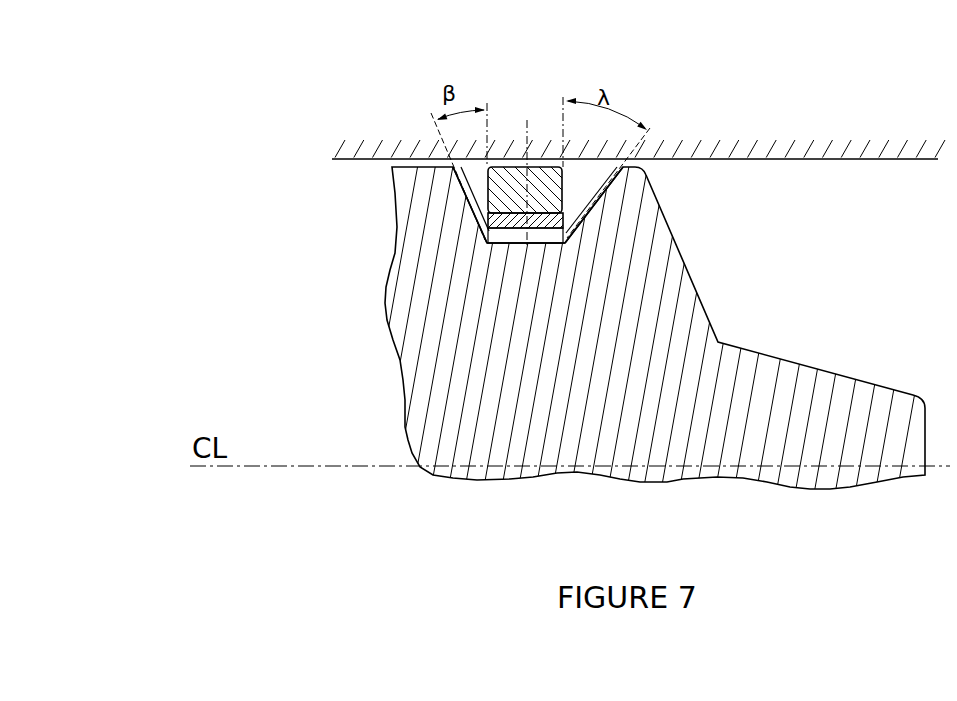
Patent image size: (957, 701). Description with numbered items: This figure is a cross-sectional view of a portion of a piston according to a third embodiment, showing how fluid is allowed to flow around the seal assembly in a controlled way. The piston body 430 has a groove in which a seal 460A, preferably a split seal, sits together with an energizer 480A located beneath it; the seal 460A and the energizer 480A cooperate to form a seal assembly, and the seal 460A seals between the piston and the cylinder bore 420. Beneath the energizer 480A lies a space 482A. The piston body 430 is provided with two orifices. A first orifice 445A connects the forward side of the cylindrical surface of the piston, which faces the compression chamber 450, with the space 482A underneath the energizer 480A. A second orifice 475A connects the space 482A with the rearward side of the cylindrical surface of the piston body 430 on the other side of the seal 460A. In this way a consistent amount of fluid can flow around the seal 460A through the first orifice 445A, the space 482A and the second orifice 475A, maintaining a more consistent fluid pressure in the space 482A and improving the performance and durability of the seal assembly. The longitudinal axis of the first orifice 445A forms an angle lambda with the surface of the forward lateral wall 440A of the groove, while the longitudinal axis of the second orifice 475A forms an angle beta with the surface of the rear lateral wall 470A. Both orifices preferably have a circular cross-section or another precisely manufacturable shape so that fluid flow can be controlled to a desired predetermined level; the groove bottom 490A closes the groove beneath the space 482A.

The cylinder bore 420 is at (398, 150).
The piston body 430 is at (497, 408).
The compression chamber 450 is at (940, 282).
The seal 460A is at (518, 185).
The rear lateral wall 470A is at (478, 185).
The second orifice 475A is at (469, 203).
The forward lateral wall 440A is at (582, 197).
The first orifice 445A is at (566, 192).
The energizer 480A is at (548, 223).
The space 482A is at (505, 236).
The groove bottom 490A is at (505, 253).